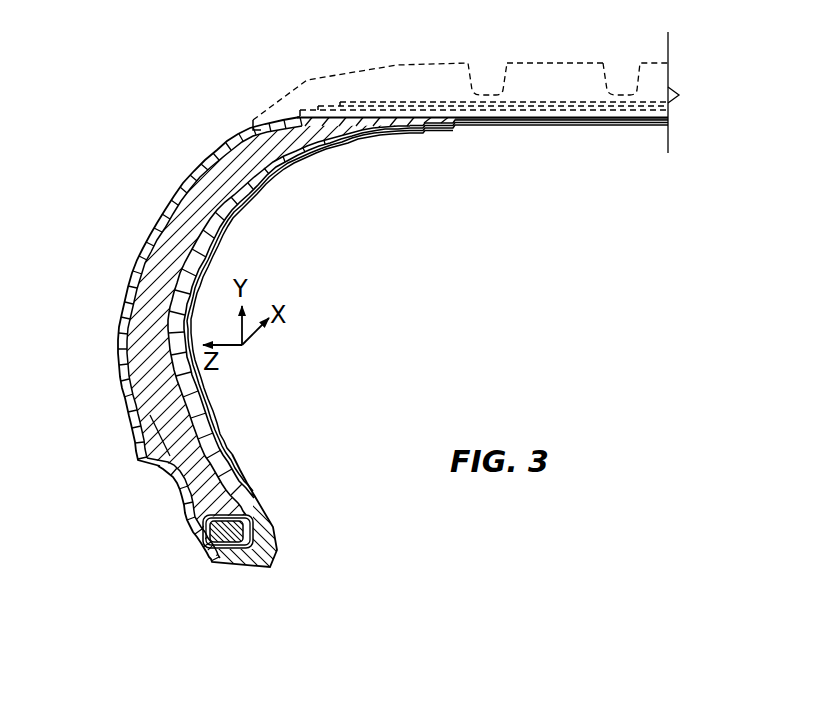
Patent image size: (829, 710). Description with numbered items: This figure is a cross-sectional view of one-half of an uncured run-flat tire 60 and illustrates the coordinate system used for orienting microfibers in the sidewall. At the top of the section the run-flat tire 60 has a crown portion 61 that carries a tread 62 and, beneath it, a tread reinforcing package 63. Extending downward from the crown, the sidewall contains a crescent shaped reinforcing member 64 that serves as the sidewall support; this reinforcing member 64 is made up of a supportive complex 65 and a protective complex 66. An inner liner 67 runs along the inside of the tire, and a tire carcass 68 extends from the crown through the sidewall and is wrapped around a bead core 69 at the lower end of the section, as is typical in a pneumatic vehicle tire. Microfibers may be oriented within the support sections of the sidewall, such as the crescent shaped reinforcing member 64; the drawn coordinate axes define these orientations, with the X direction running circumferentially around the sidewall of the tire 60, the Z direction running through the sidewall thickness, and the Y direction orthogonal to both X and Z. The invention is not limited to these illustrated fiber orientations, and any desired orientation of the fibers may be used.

The run-flat tire 60 is at (136, 48).
The crown portion 61 is at (391, 60).
The tread 62 is at (521, 72).
The tread reinforcing package 63 is at (558, 98).
The crescent shaped reinforcing member 64 is at (218, 221).
The supportive complex 65 is at (136, 267).
The protective complex 66 is at (119, 336).
The inner liner 67 is at (478, 127).
The tire carcass 68 is at (571, 121).
The bead core 69 is at (213, 537).